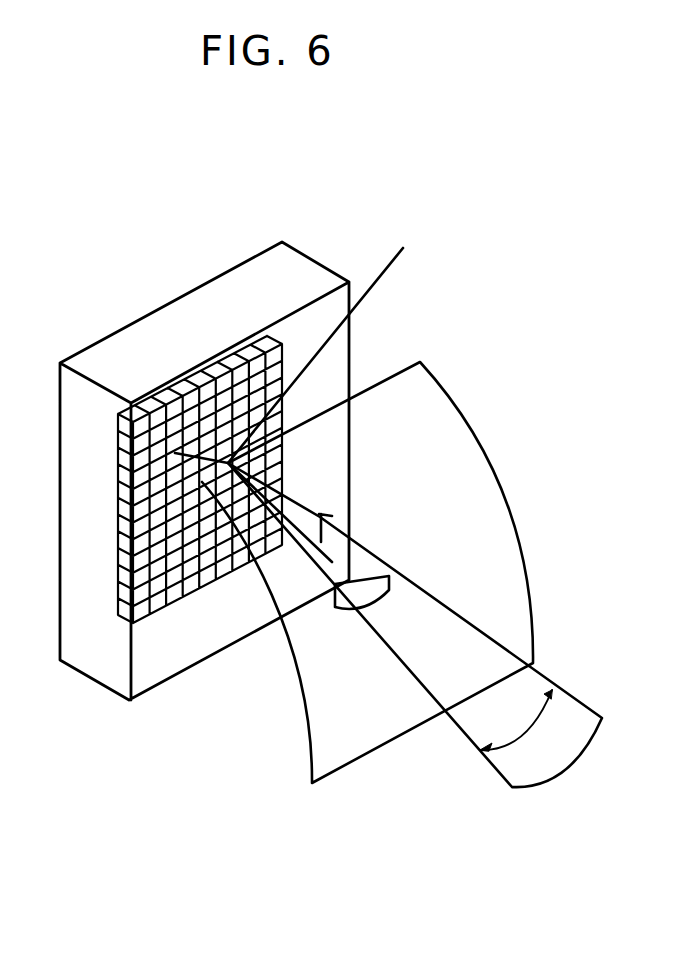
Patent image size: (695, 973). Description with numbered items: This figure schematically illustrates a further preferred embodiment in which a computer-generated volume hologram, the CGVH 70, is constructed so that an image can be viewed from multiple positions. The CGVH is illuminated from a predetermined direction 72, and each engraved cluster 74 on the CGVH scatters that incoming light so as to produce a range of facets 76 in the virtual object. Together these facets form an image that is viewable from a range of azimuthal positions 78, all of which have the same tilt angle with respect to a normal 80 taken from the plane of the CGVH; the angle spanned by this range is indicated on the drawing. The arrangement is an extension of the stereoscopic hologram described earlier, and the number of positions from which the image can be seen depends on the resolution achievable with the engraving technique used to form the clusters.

The housing 70 is at (148, 308).
The predetermined direction 72 is at (392, 262).
The cluster 74 is at (224, 463).
The facets 76 is at (350, 585).
The scan sector 78 is at (437, 377).
The normal 80 is at (322, 540).